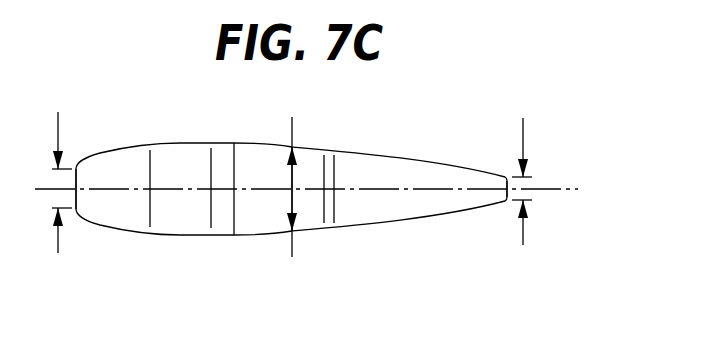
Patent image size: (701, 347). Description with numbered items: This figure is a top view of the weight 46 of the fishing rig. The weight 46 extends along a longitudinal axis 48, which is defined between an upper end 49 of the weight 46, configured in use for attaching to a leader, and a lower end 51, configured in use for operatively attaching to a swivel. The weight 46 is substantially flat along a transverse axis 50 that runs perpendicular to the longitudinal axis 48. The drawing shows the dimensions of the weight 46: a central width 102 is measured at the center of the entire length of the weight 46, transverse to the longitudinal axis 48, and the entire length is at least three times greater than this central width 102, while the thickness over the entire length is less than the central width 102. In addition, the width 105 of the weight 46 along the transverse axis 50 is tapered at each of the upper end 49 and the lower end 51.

The weight 46 is at (253, 257).
The longitudinal axis 48 is at (567, 188).
The upper end 49 is at (528, 196).
The transverse axis 50 is at (291, 127).
The lower end 51 is at (76, 209).
The central width 102 is at (297, 171).
The width 105 is at (80, 157).